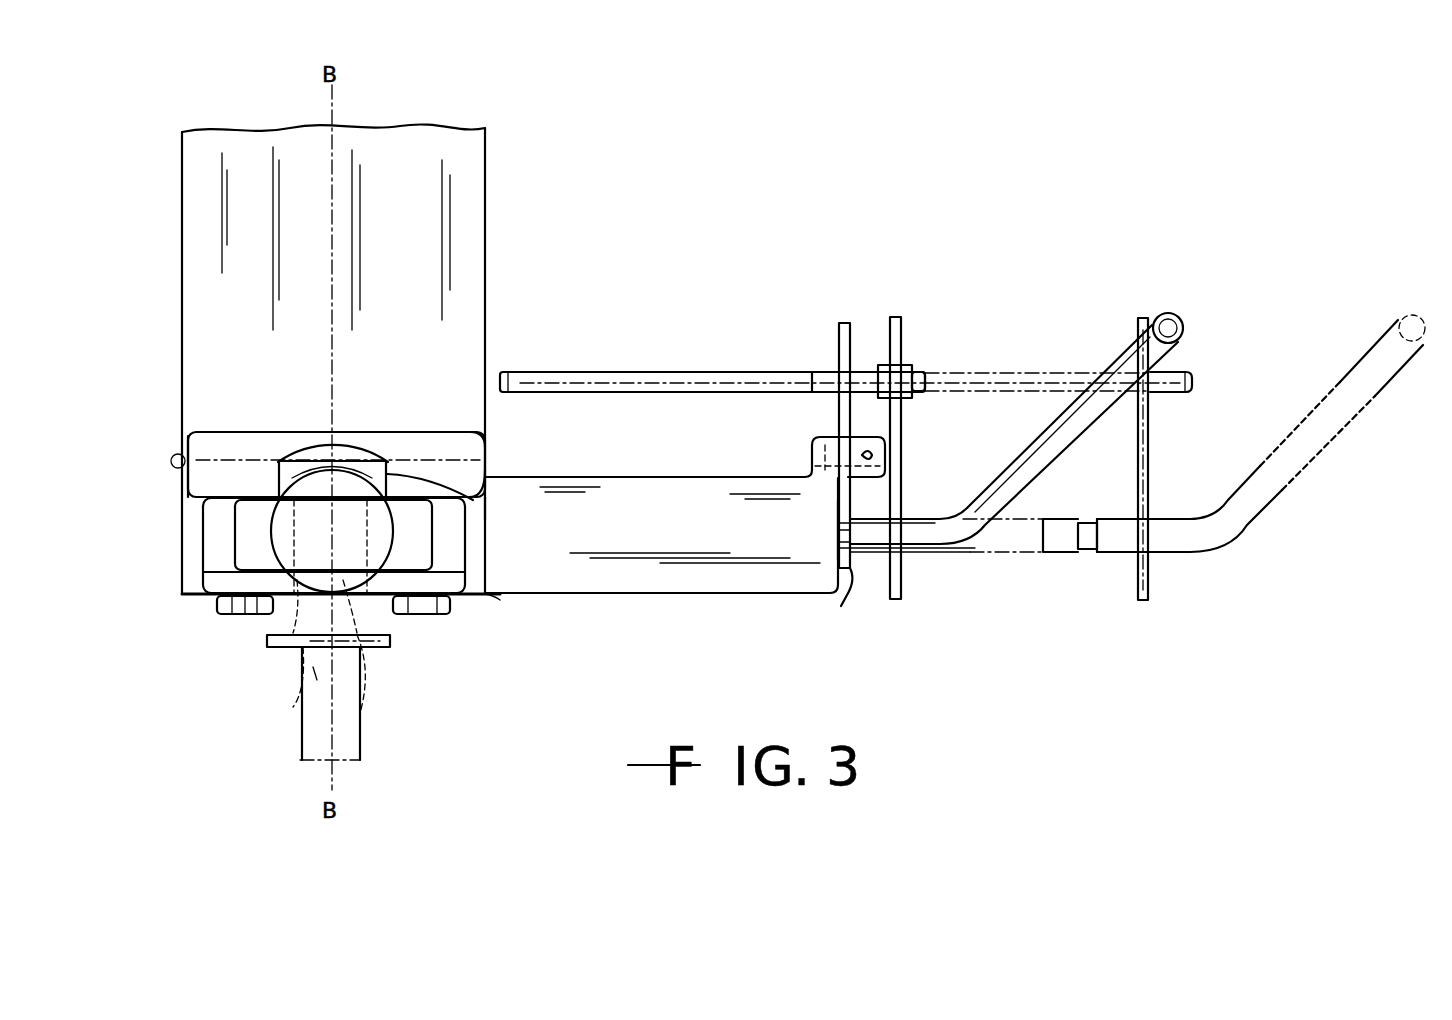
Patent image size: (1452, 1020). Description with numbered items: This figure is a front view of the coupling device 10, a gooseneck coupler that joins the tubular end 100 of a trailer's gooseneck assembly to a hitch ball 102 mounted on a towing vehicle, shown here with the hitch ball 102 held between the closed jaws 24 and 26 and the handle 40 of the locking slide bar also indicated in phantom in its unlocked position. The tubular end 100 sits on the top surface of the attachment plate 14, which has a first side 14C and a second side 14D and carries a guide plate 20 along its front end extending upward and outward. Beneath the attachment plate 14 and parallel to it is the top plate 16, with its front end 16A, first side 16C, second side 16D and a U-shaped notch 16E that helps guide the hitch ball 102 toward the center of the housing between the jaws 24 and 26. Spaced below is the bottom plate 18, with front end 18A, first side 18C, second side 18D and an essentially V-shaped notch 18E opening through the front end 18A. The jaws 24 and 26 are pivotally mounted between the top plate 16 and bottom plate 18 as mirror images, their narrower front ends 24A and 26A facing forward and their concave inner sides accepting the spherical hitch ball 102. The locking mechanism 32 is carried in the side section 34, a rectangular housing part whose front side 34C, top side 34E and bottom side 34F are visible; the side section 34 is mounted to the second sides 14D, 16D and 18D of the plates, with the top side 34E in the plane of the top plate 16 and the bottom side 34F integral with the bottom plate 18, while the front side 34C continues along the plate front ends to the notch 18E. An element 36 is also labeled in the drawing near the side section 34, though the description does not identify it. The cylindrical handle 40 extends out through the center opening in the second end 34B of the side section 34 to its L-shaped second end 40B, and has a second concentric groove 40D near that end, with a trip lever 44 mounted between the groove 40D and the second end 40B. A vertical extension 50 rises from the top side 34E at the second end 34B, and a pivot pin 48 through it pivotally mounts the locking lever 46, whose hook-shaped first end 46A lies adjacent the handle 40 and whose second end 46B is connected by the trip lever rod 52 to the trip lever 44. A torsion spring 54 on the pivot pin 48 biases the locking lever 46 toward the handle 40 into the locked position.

The coupling device 10 is at (740, 226).
The tubular end 100 is at (467, 197).
The attachment plate 14 is at (266, 430).
The first side of attachment plate 14C is at (485, 438).
The second side of attachment plate 14D is at (180, 432).
The top plate 16 is at (185, 493).
The front end of top plate 16A is at (445, 470).
The first side of top plate 16C is at (490, 477).
The second side of top plate 16D is at (190, 463).
The U-shaped notch 16E is at (485, 512).
The bottom plate 18 is at (455, 600).
The front end of bottom plate 18A is at (247, 613).
The first side of bottom plate 18C is at (480, 598).
The second side of bottom plate 18D is at (232, 600).
The notch 18E is at (383, 600).
The guide plate 20 is at (300, 440).
The first jaw 24 is at (260, 538).
The front end of first jaw 24A is at (358, 712).
The second jaw 26 is at (420, 537).
The front end of second jaw 26A is at (293, 707).
The hitch ball 102 is at (345, 660).
The locking mechanism 32 is at (643, 628).
The side section 34 is at (728, 575).
The second end of side section 34B is at (845, 530).
The front side of side section 34C is at (690, 534).
The top side of side section 34E is at (636, 470).
The bottom side of side section 34F is at (594, 606).
The support tube 36 is at (923, 515).
The handle 40 is at (1025, 555).
The second end of handle 40B is at (1172, 328).
The second concentric groove 40D is at (1082, 552).
The trip lever 44 is at (896, 317).
The locking lever 46 is at (838, 346).
The first end of locking lever 46A is at (843, 592).
The second end of locking lever 46B is at (845, 323).
The pivot pin 48 is at (812, 466).
The vertical extension 50 is at (818, 445).
The trip lever rod 52 is at (920, 373).
The torsion spring 54 is at (872, 455).